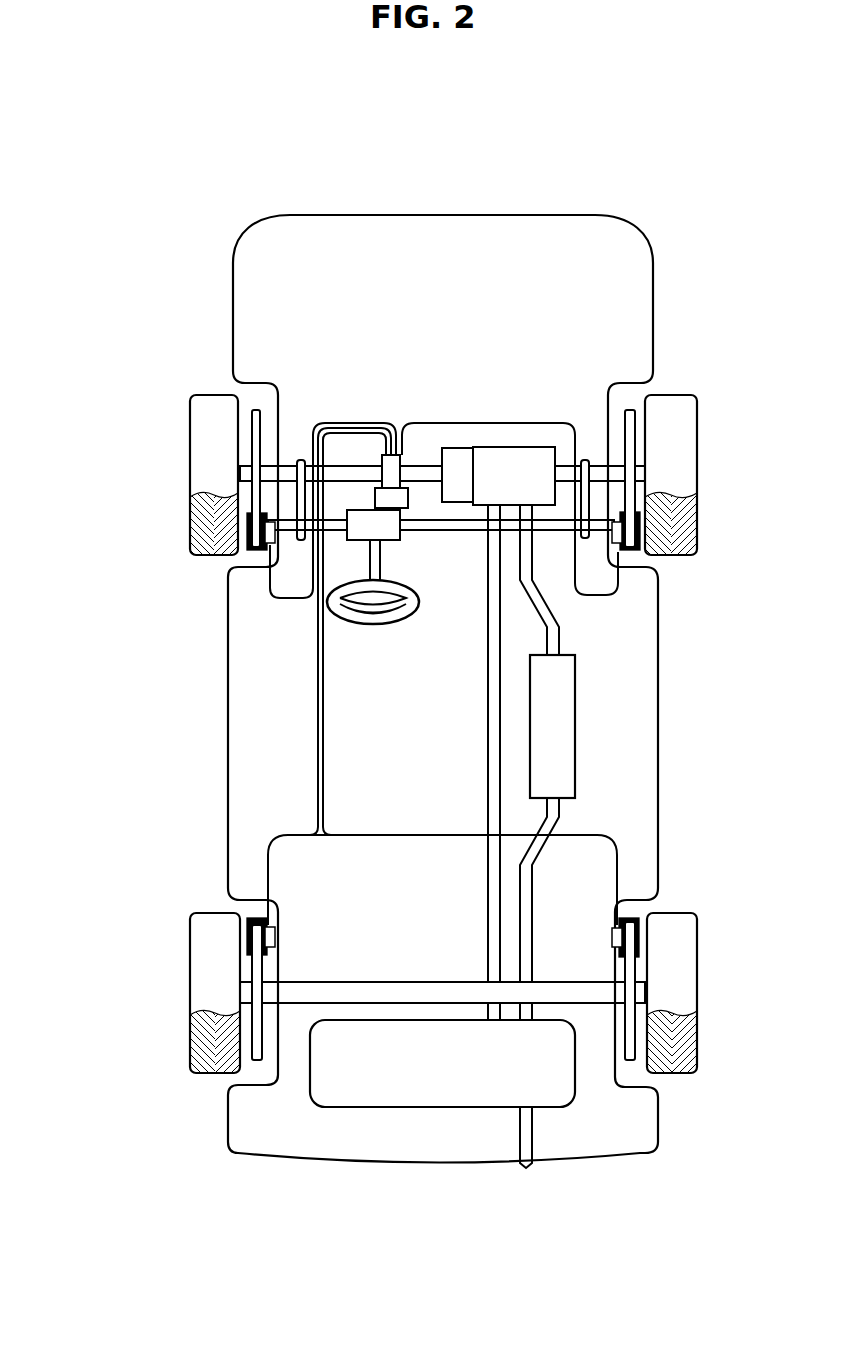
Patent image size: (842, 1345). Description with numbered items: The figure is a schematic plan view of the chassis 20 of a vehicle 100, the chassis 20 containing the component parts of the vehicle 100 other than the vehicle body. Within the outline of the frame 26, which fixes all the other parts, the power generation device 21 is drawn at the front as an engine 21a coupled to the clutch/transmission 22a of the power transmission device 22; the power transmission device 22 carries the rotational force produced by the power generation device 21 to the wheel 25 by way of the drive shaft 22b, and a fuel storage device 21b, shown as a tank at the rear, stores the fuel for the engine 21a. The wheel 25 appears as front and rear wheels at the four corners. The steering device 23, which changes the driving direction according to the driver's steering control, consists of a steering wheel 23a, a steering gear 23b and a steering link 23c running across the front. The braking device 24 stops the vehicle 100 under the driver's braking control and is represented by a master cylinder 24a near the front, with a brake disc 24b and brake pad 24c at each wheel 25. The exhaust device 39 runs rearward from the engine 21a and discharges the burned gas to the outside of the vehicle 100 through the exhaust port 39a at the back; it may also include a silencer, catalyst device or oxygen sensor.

The vehicle 100 is at (211, 159).
The chassis 20 is at (612, 196).
The power generation device 21 is at (454, 778).
The engine 21a is at (527, 447).
The fuel storage device 21b is at (363, 1098).
The power transmission device 22 is at (442, 695).
The clutch/transmission 22a is at (455, 448).
The drive shaft 22b is at (288, 460).
The steering device 23 is at (379, 589).
The steering wheel 23a is at (370, 623).
The steering gear 23b is at (393, 540).
The steering link 23c is at (315, 545).
The braking device 24 is at (358, 706).
The master cylinder 24a is at (401, 452).
The brake disc 24b is at (247, 486).
The brake pad 24c is at (247, 528).
The wheel 25 is at (198, 416).
The frame 26 is at (648, 778).
The exhaust device 39 is at (590, 722).
The exhaust port 39a is at (525, 1167).